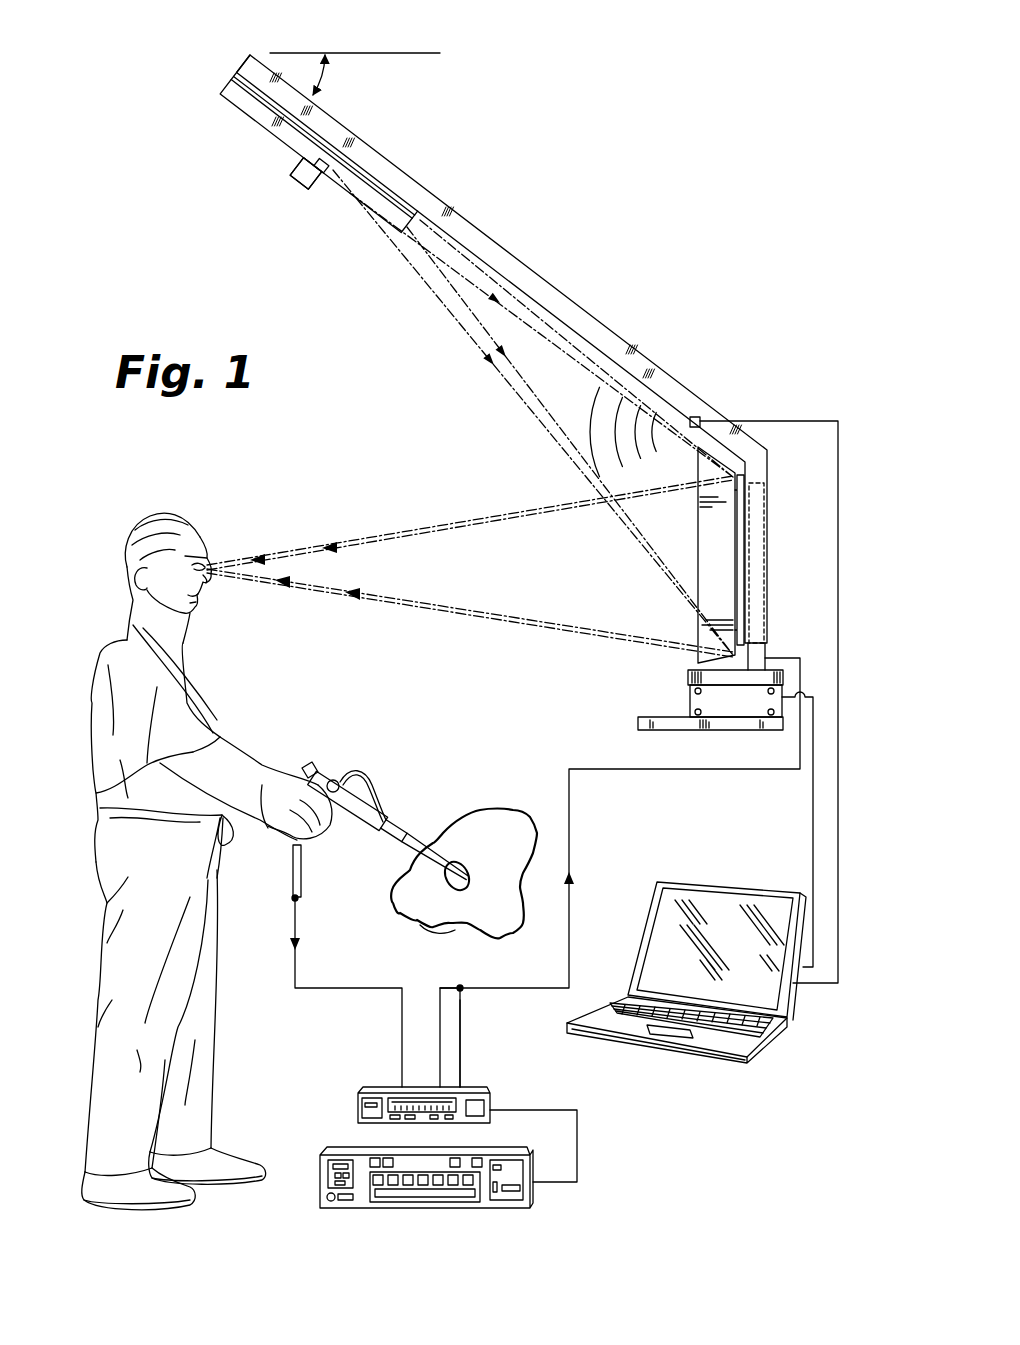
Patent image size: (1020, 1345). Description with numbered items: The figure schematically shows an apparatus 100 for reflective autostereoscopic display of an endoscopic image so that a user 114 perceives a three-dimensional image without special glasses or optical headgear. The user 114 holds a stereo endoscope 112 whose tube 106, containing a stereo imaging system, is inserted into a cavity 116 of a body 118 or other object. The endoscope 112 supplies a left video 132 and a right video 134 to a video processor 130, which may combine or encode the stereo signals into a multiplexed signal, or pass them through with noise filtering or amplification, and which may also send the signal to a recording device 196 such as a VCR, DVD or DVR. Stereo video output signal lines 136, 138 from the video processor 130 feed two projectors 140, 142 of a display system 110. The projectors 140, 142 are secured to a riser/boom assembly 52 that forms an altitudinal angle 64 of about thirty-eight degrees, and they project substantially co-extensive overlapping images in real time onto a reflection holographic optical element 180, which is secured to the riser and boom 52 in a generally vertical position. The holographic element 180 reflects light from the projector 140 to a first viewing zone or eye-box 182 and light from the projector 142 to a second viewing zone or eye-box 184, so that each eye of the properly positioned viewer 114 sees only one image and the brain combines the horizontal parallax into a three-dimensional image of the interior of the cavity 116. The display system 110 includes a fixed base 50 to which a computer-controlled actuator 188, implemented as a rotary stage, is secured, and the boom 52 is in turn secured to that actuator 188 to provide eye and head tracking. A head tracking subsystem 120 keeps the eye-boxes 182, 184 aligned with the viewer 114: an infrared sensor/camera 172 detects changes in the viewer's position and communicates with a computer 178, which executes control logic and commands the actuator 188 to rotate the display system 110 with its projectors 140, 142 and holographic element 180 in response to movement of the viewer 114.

The apparatus 100 is at (607, 152).
The display system 110 is at (615, 330).
The altitudinal angle 64 is at (320, 83).
The projector 140 is at (296, 183).
The projector 142 is at (306, 174).
The infrared sensor/camera 172 is at (700, 417).
The riser/boom assembly 52 is at (770, 556).
The reflection holographic optical element 180 is at (733, 572).
The computer-controlled actuator 188 is at (680, 696).
The fixed base 50 is at (650, 718).
The first viewing zone or eye-box 182 is at (282, 550).
The second viewing zone or eye-box 184 is at (352, 541).
The user 114 is at (108, 556).
The stereo endoscope 112 is at (373, 802).
The tube 106 is at (407, 853).
The right video 134 is at (305, 880).
The cavity 116 is at (472, 893).
The body 118 is at (433, 930).
The left video 132 is at (293, 877).
The stereo video output signal line 136 is at (440, 990).
The stereo video output signal line 138 is at (463, 1010).
The video processor 130 is at (358, 1110).
The recording device 196 is at (425, 1208).
The head tracking subsystem 120 is at (712, 1078).
The computer 178 is at (655, 1052).